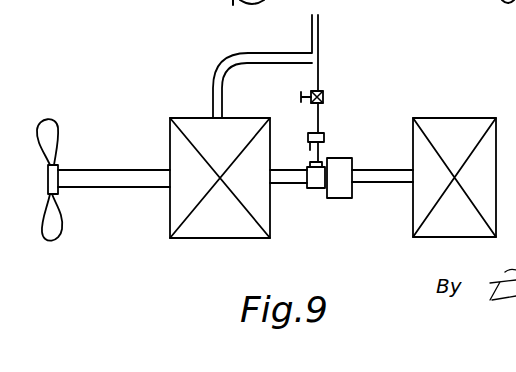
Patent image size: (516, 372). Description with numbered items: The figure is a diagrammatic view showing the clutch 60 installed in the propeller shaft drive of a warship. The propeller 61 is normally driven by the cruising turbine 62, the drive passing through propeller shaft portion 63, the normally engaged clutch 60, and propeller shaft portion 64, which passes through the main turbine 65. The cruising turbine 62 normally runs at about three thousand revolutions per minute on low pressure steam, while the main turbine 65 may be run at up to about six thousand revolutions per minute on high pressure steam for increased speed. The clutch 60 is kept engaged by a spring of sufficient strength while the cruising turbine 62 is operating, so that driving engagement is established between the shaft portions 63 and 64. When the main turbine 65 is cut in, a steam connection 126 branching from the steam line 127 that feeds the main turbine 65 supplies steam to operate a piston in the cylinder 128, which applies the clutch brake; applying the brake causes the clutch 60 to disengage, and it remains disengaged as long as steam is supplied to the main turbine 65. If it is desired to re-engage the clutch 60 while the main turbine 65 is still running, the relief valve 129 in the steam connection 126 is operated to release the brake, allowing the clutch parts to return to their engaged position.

The clutch 60 is at (338, 198).
The propeller 61 is at (50, 232).
The cruising turbine 62 is at (442, 118).
The propeller shaft portion 63 is at (378, 183).
The propeller shaft portion 64 is at (123, 188).
The main turbine 65 is at (185, 118).
The steam connection 126 is at (321, 80).
The steam line 127 is at (321, 40).
The cylinder 128 is at (324, 139).
The relief valve 129 is at (301, 97).